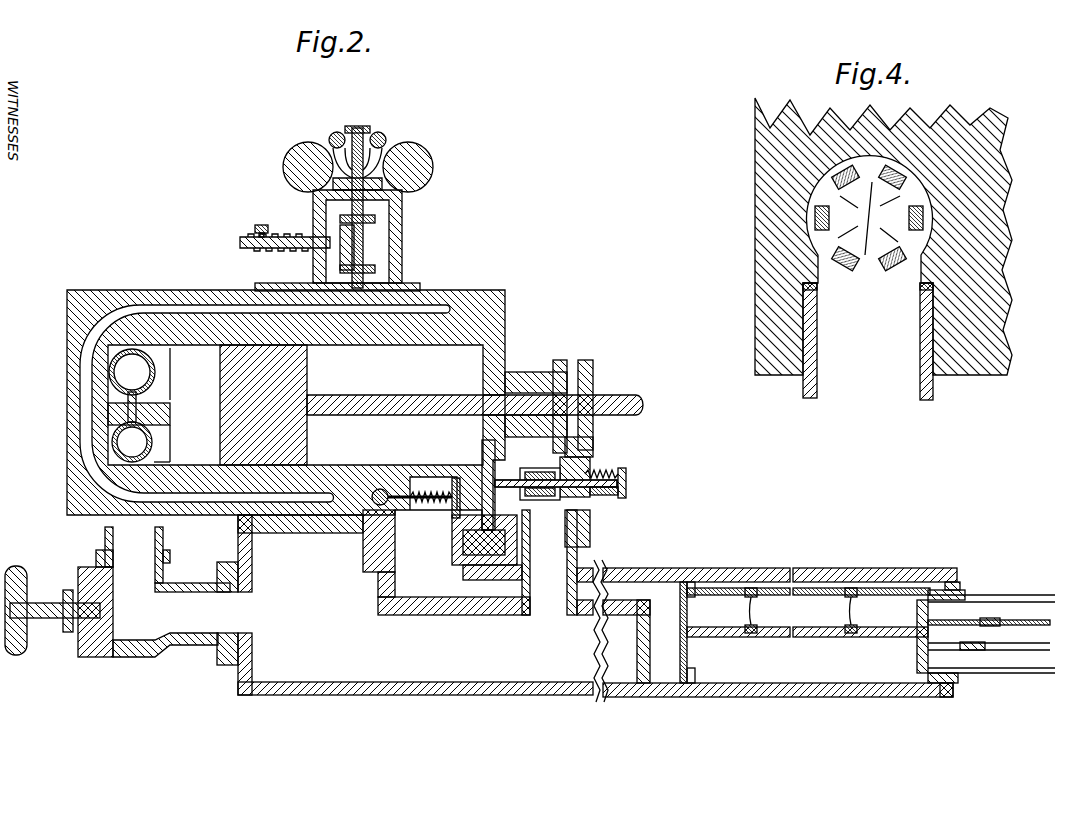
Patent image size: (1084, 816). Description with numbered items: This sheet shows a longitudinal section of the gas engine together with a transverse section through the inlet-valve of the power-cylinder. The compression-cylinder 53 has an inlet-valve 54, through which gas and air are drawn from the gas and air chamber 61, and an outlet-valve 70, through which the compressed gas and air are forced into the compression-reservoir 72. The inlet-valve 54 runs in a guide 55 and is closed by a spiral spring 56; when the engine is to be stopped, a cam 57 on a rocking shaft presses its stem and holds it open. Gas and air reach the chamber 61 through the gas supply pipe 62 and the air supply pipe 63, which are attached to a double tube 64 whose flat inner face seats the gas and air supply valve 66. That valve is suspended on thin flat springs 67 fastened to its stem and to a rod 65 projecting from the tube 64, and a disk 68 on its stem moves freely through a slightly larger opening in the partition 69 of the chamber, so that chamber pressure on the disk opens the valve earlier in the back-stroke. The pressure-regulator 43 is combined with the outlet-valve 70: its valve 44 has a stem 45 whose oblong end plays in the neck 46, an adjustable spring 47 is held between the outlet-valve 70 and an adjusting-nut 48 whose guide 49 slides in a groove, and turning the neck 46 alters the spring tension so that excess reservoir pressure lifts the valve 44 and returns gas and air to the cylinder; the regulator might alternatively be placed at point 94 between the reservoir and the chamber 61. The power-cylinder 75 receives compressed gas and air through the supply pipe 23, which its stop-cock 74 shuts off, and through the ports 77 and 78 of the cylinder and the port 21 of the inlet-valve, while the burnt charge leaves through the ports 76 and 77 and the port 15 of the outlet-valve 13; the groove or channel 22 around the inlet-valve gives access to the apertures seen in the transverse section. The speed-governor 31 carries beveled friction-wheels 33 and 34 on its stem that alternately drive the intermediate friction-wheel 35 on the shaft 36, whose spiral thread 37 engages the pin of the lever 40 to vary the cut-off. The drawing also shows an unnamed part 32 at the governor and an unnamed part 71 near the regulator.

In FIG. 2, the outlet-valve of the power-cylinder 13 is at (132, 372).
In FIG. 2, the port of the outlet-valve 15 is at (132, 442).
In FIG. 4, the port of the inlet-valve 21 is at (869, 218).
In FIG. 4, the groove or channel 22 is at (807, 222).
In FIG. 2, the supply-pipe 23 is at (171, 592).
In FIG. 4, the supply-pipe 23 is at (868, 341).
In FIG. 2, the speed-governor 31 is at (358, 148).
In FIG. 2, the spindle 32 is at (363, 240).
In FIG. 2, the beveled friction-wheel 33 is at (375, 219).
In FIG. 2, the beveled friction-wheel 34 is at (375, 269).
In FIG. 2, the intermediate beveled friction-wheel 35 is at (337, 240).
In FIG. 2, the shaft 36 is at (246, 243).
In FIG. 2, the spiral thread 37 is at (286, 233).
In FIG. 2, the lever 40 is at (251, 228).
In FIG. 2, the pressure-regulator 43 is at (618, 466).
In FIG. 2, the pressure-regulator valve 44 is at (547, 482).
In FIG. 2, the stem 45 is at (626, 491).
In FIG. 2, the neck 46 is at (626, 476).
In FIG. 2, the adjustable spring 47 is at (517, 540).
In FIG. 2, the adjusting-nut 48 is at (540, 490).
In FIG. 2, the guide 49 is at (546, 461).
In FIG. 2, the compression-cylinder 53 is at (395, 405).
In FIG. 2, the inlet-valve of the compression-cylinder 54 is at (484, 493).
In FIG. 2, the guide 55 is at (460, 478).
In FIG. 2, the spiral spring 56 is at (412, 492).
In FIG. 2, the cam 57 is at (263, 405).
In FIG. 2, the gas and air chamber 61 is at (660, 603).
In FIG. 2, the gas supply pipe 62 is at (989, 635).
In FIG. 2, the air supply pipe 63 is at (991, 634).
In FIG. 2, the double tube 64 is at (960, 590).
In FIG. 2, the rod 65 is at (808, 604).
In FIG. 2, the gas and air supply valve 66 is at (917, 614).
In FIG. 2, the thin flat springs 67 is at (801, 610).
In FIG. 2, the disk 68 is at (673, 632).
In FIG. 2, the partition 69 is at (678, 632).
In FIG. 2, the outlet-valve of the compression-cylinder 70 is at (486, 485).
In FIG. 2, the bracket 71 is at (575, 477).
In FIG. 2, the compression-reservoir 72 is at (405, 605).
In FIG. 2, the stop-cock 74 is at (100, 610).
In FIG. 2, the power-cylinder 75 is at (184, 421).
In FIG. 2, the port of the power-cylinder 76 is at (170, 350).
In FIG. 2, the port of the power-cylinder 77 is at (170, 412).
In FIG. 2, the port of the power-cylinder 78 is at (170, 458).
In FIG. 2, the point 94 is at (626, 641).